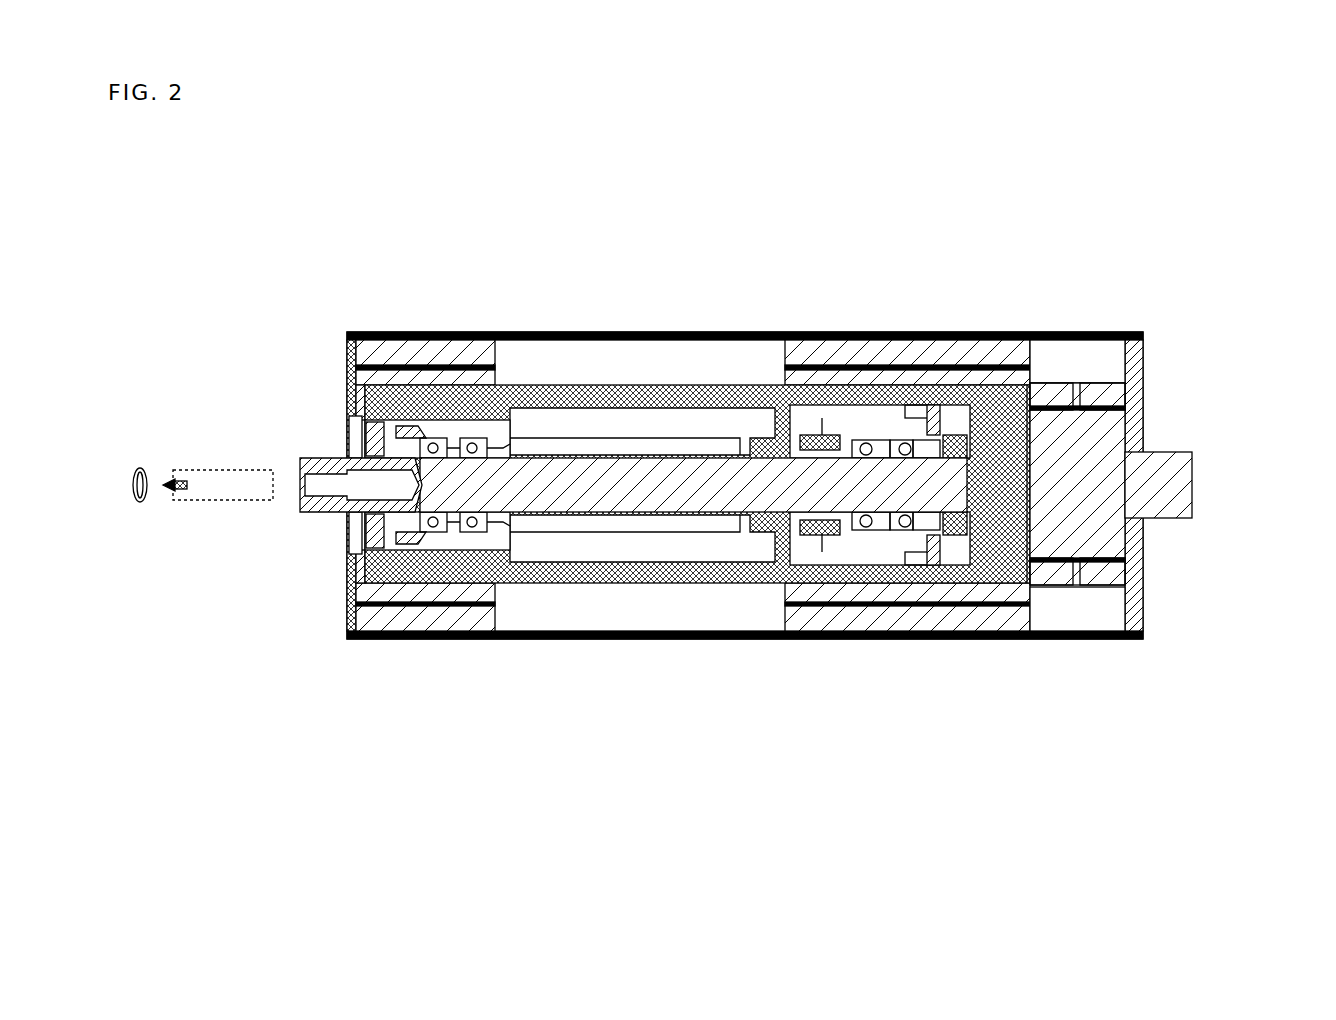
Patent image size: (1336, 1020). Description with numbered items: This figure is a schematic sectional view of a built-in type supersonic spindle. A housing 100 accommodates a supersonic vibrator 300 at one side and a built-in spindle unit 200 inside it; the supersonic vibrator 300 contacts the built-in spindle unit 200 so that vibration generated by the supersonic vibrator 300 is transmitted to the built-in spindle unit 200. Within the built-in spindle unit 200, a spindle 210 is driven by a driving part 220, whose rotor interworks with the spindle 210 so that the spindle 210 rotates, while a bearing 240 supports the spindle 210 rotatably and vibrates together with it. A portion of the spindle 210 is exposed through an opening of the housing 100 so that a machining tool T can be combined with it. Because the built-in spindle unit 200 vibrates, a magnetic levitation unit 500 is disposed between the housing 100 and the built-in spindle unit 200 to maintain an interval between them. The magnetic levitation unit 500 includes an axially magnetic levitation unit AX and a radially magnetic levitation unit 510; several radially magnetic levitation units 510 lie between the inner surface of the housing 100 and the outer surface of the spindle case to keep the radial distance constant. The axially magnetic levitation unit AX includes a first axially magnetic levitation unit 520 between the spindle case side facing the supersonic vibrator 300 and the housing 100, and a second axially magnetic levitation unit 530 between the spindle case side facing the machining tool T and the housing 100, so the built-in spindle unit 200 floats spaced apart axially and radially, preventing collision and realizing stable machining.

The housing 100 is at (871, 331).
The built-in spindle unit 200 is at (697, 567).
The spindle 210 is at (693, 485).
The driving part 220 is at (642, 485).
The bearing 240 is at (881, 548).
The supersonic vibrator 300 is at (1171, 447).
The magnetic levitation unit 500 is at (693, 487).
The radially magnetic levitation unit 510 is at (767, 618).
The first axially magnetic levitation unit 520 is at (1071, 366).
The second axially magnetic levitation unit 530 is at (345, 391).
The axially magnetic levitation unit AX is at (720, 484).
The machining tool T is at (216, 462).